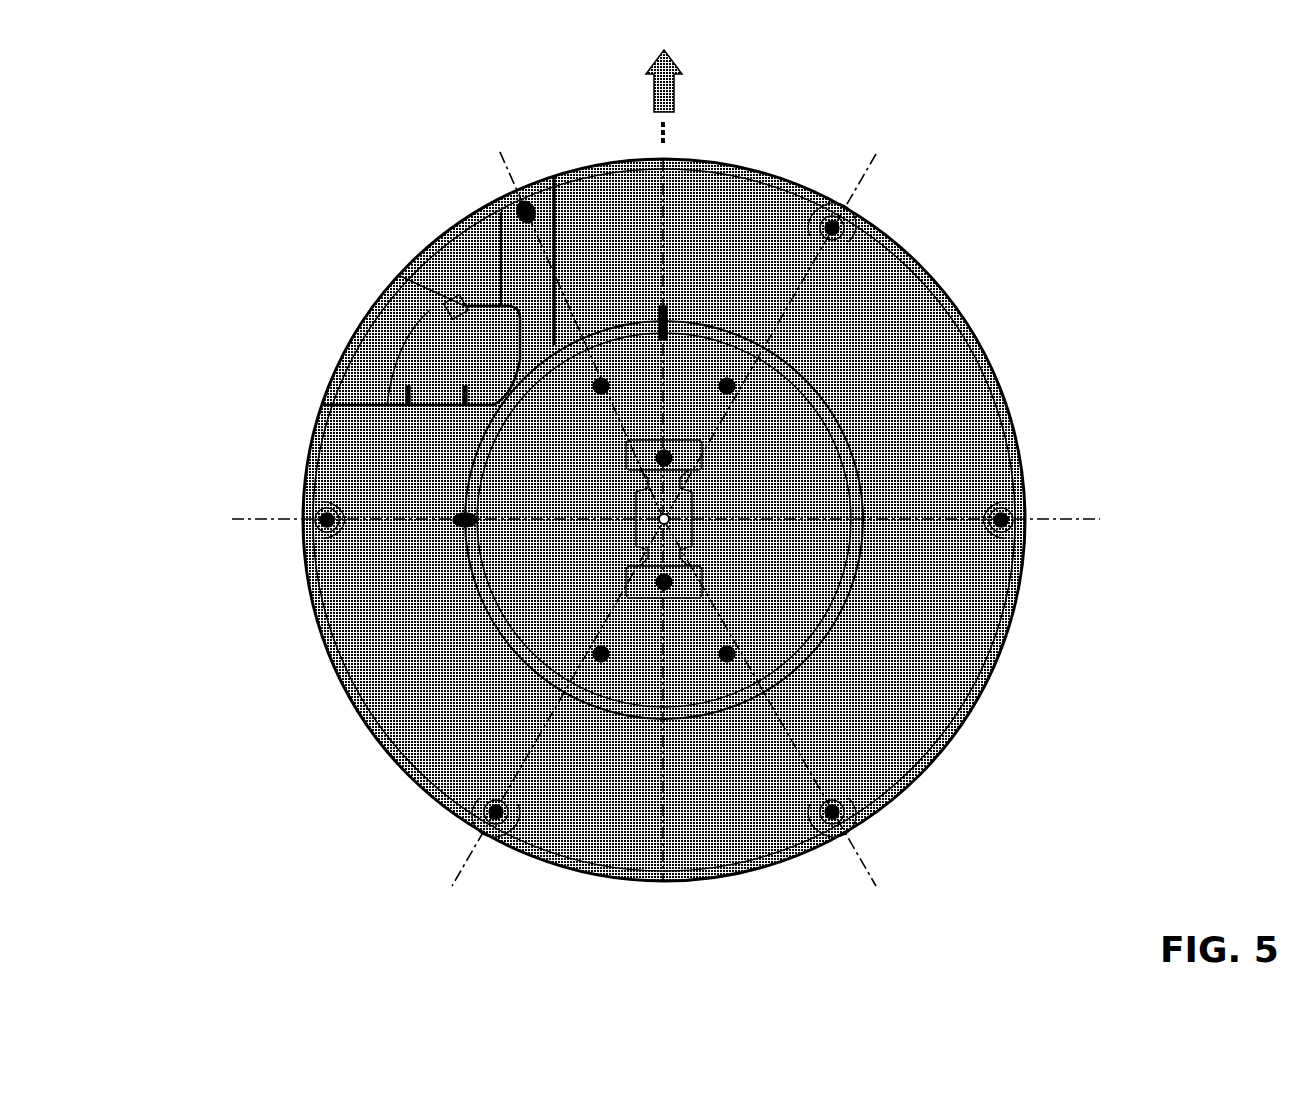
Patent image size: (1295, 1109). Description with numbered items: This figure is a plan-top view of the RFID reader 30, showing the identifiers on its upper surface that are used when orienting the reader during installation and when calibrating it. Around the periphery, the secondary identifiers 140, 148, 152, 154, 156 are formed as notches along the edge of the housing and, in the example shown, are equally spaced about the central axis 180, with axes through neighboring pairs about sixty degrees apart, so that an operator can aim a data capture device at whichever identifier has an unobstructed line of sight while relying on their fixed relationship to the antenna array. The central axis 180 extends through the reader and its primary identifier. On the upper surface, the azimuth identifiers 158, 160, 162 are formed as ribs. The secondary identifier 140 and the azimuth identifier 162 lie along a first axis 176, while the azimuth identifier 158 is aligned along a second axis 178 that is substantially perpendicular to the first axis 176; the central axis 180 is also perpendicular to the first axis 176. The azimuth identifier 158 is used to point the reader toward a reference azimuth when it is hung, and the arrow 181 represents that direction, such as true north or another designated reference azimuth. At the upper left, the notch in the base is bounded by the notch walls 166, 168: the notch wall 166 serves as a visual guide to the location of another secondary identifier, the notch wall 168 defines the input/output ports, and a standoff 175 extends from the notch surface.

The RFID reader 30 is at (383, 732).
The secondary identifier 140 is at (322, 520).
The secondary identifier 148 is at (838, 224).
The secondary identifier 152 is at (1010, 521).
The secondary identifier 154 is at (836, 814).
The secondary identifier 156 is at (491, 814).
The azimuth identifier 158 is at (666, 322).
The azimuth identifier 160 is at (840, 617).
The azimuth identifier 162 is at (462, 521).
The notch wall 166 is at (556, 217).
The notch wall 168 is at (330, 405).
The standoff 175 is at (524, 210).
The first axis 176 is at (235, 519).
The second axis 178 is at (666, 131).
The central axis 180 is at (661, 520).
The arrow 181 is at (673, 74).